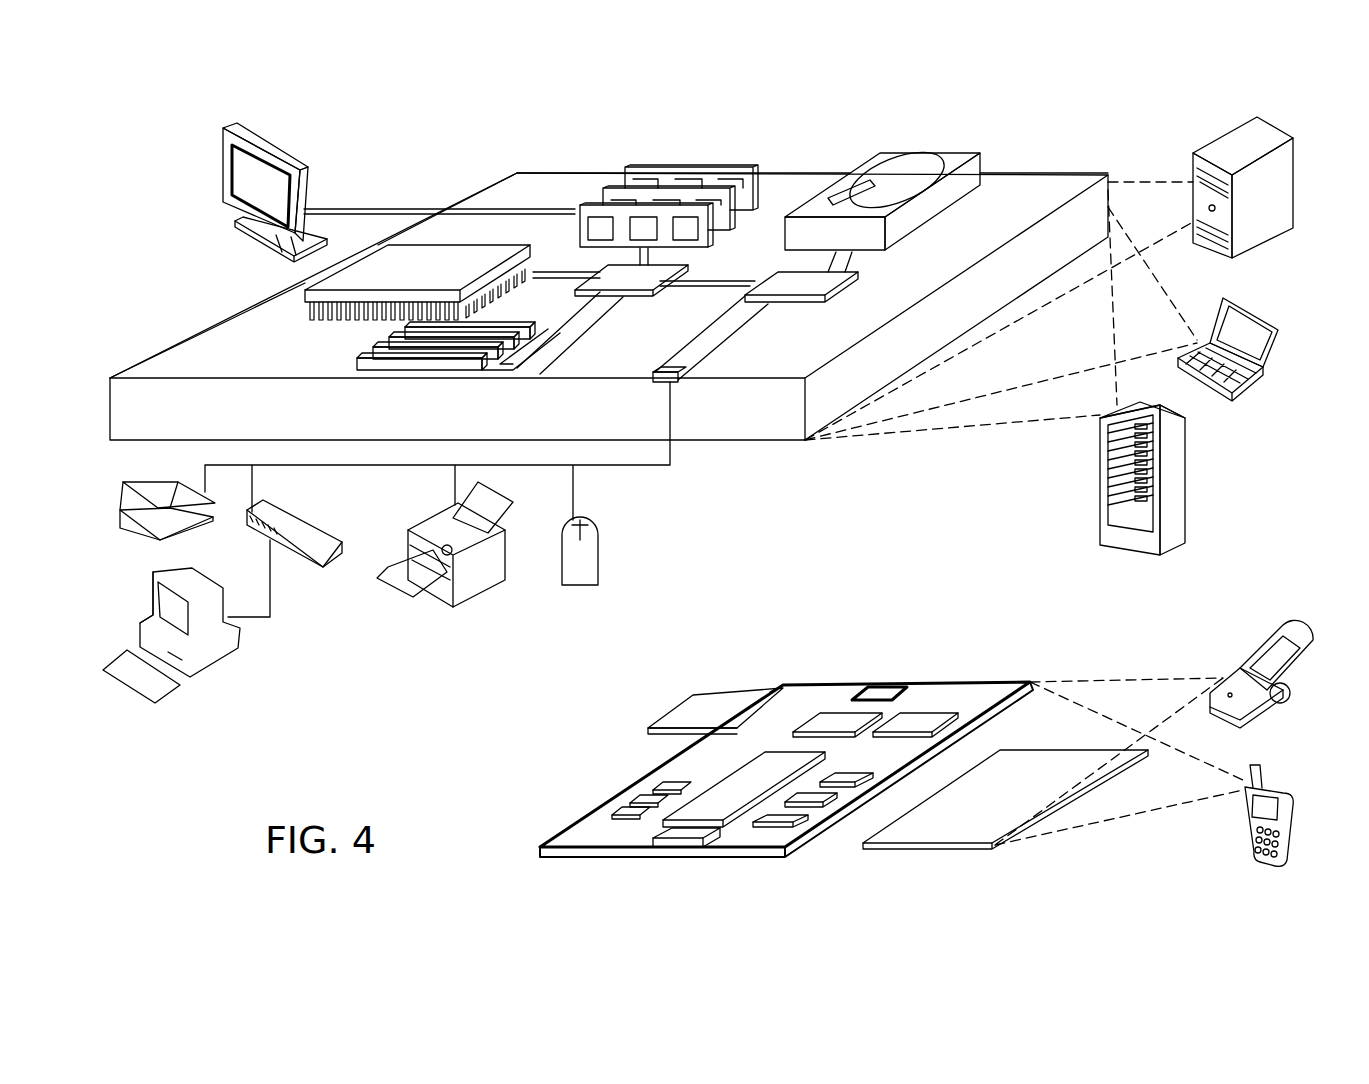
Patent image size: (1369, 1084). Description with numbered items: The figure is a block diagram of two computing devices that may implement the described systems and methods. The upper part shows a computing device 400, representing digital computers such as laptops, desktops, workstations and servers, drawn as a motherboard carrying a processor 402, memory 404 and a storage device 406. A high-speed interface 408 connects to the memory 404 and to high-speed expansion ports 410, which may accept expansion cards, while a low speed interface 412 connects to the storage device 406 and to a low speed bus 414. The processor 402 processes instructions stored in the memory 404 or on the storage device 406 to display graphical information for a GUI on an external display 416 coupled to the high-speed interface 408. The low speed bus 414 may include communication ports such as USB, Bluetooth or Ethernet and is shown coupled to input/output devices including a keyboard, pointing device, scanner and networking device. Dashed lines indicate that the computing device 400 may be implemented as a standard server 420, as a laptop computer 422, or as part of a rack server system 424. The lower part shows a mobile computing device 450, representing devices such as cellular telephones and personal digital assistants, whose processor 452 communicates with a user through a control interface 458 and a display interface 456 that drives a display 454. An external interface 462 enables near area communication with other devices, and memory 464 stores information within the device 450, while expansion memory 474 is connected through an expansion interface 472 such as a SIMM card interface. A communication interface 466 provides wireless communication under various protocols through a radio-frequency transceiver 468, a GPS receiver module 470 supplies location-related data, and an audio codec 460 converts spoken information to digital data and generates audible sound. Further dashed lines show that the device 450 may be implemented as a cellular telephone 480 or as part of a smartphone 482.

The computing device 400 is at (427, 150).
The processor 402 is at (305, 296).
The memory 404 is at (645, 167).
The storage device 406 is at (875, 165).
The high-speed interface 408 is at (600, 275).
The high-speed expansion ports 410 is at (358, 343).
The low speed interface 412 is at (805, 290).
The low speed bus 414 is at (680, 382).
The display 416 is at (222, 132).
The standard server 420 is at (1192, 162).
The laptop computer 422 is at (1226, 300).
The rack server system 424 is at (1100, 510).
The computing device 450 is at (758, 655).
The processor 452 is at (710, 855).
The display 454 is at (997, 848).
The display interface 456 is at (798, 855).
The control interface 458 is at (836, 818).
The audio codec 460 is at (852, 787).
The external interface 462 is at (683, 858).
The memory 464 is at (635, 806).
The communication interface 466 is at (838, 718).
The transceiver 468 is at (917, 718).
The GPS receiver module 470 is at (882, 690).
The expansion interface 472 is at (762, 692).
The expansion memory 474 is at (693, 696).
The cellular telephone 480 is at (1270, 628).
The smartphone 482 is at (1254, 768).